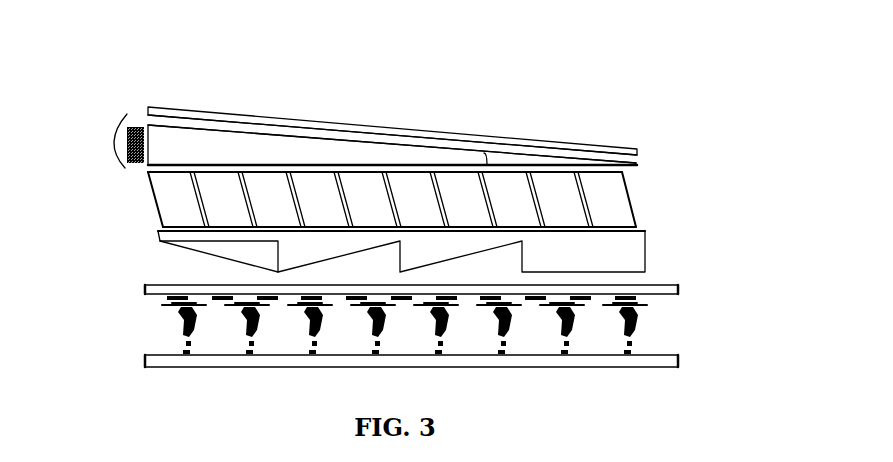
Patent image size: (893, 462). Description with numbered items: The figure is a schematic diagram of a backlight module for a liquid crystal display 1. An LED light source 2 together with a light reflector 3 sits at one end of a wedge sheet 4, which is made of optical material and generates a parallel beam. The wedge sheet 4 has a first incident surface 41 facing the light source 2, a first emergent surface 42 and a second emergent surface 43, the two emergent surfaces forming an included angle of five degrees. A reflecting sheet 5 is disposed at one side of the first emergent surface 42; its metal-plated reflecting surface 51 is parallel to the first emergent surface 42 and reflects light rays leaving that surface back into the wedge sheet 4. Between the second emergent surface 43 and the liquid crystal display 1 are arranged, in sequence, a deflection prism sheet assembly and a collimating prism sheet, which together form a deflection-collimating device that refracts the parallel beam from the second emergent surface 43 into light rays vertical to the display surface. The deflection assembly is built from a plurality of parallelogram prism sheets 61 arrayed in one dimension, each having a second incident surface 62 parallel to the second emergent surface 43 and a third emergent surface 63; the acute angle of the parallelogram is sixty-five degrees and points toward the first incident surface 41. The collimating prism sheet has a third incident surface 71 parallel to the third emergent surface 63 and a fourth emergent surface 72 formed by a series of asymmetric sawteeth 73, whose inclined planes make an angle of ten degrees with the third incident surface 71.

The liquid crystal display 1 is at (652, 320).
The LED light source 2 is at (147, 137).
The light reflector 3 is at (115, 143).
The wedge sheet 4 is at (188, 144).
The first incident surface 41 is at (145, 136).
The first emergent surface 42 is at (323, 137).
The second emergent surface 43 is at (152, 166).
The reflecting sheet 5 is at (207, 112).
The reflecting surface 51 is at (372, 132).
The parallelogram prism sheets 61 is at (613, 195).
The second incident surface 62 is at (595, 175).
The third emergent surface 63 is at (178, 225).
The third incident surface 71 is at (617, 231).
The fourth emergent surface 72 is at (222, 258).
The sawteeth 73 is at (632, 250).